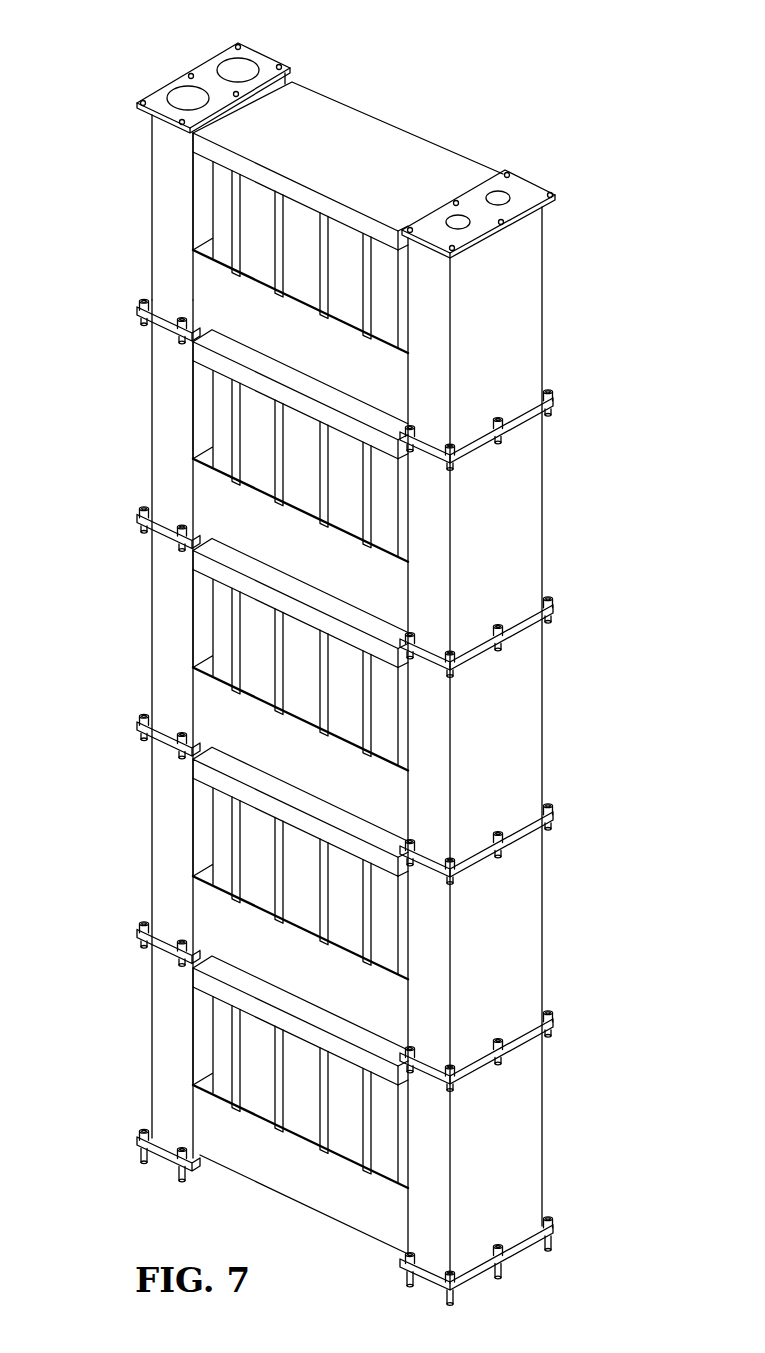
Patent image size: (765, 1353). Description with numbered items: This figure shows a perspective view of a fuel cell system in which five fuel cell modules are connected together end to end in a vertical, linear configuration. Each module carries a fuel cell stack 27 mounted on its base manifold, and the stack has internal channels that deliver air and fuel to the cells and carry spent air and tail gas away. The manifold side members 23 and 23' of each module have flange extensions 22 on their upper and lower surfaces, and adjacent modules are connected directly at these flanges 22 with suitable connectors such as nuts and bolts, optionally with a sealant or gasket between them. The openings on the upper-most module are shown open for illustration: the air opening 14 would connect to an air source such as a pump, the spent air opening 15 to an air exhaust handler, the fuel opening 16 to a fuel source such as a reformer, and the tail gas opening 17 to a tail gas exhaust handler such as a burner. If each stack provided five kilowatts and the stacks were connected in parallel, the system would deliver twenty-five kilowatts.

The air opening 14 is at (225, 70).
The spent air opening 15 is at (188, 98).
The fuel opening 16 is at (500, 197).
The tail gas opening 17 is at (460, 218).
The flange extension 22 is at (258, 57).
The manifold side member 23 is at (358, 678).
The manifold side member 23' is at (120, 729).
The fuel cell stack 27 is at (253, 213).